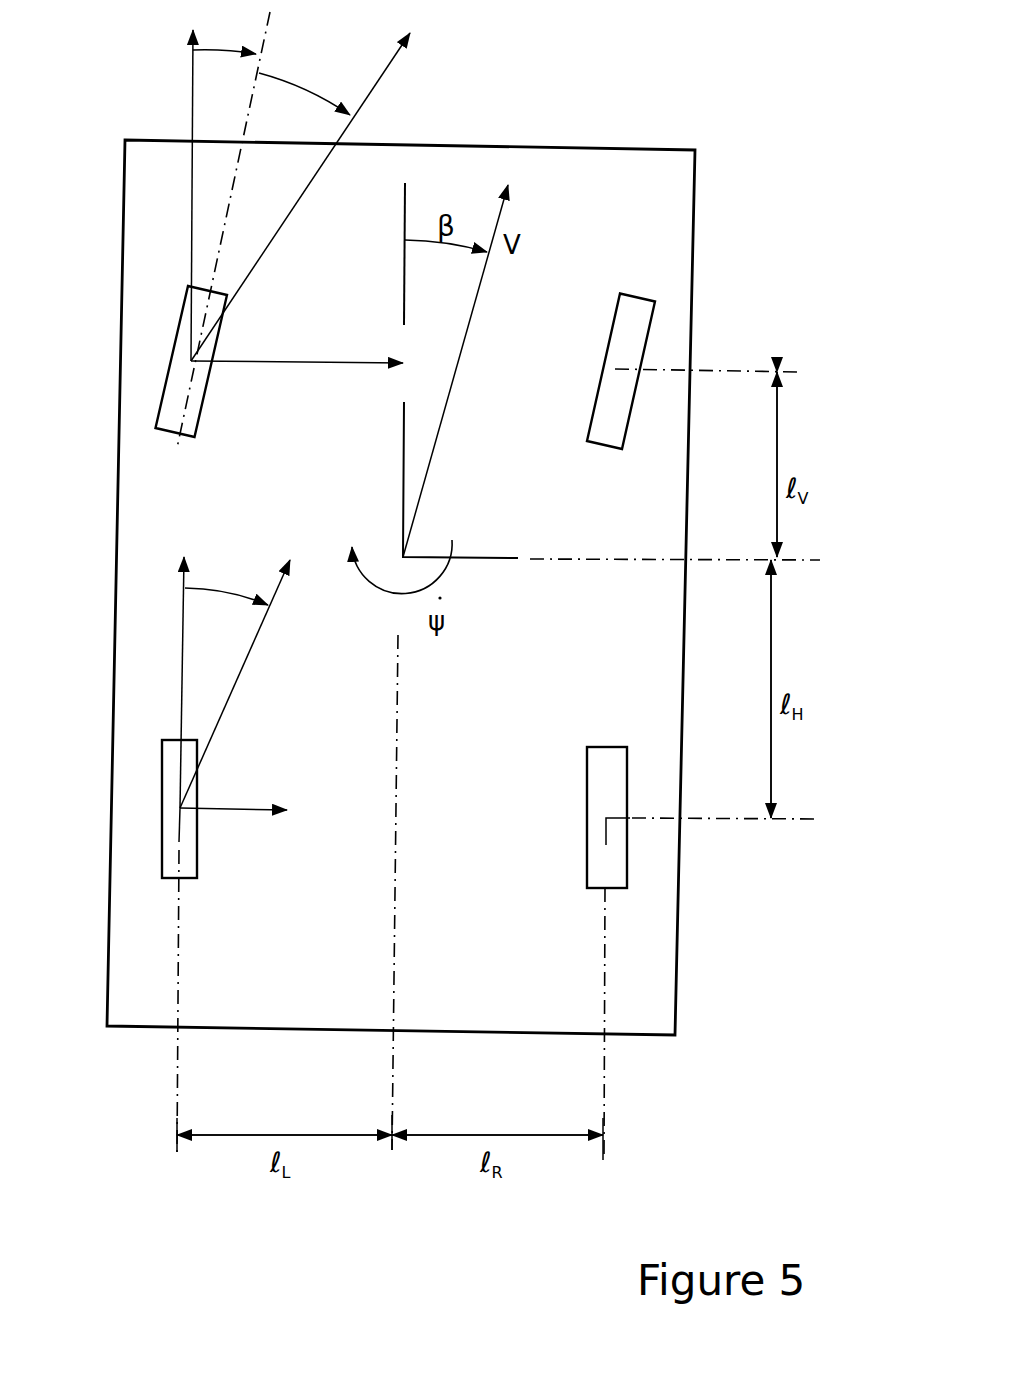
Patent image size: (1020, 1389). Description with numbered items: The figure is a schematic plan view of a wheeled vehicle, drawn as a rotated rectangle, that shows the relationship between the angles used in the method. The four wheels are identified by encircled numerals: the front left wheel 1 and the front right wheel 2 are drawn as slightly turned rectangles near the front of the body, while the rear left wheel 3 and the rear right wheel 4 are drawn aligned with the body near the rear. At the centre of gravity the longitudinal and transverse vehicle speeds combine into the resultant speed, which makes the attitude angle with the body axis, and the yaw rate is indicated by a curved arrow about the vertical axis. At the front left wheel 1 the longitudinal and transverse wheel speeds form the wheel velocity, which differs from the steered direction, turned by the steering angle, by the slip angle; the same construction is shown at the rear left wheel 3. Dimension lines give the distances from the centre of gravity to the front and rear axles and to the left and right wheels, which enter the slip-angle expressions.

The front left wheel 1 is at (229, 230).
The front right wheel 2 is at (693, 319).
The rear left wheel 3 is at (158, 854).
The rear right wheel 4 is at (703, 953).